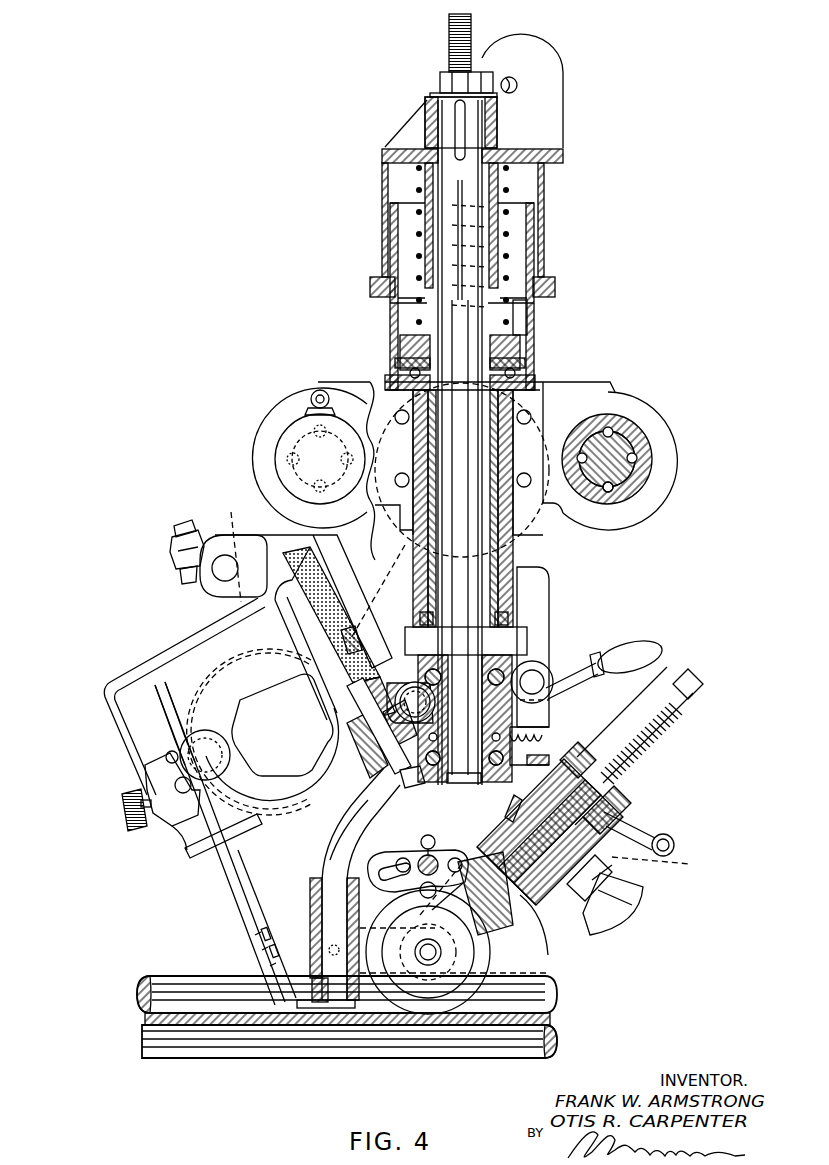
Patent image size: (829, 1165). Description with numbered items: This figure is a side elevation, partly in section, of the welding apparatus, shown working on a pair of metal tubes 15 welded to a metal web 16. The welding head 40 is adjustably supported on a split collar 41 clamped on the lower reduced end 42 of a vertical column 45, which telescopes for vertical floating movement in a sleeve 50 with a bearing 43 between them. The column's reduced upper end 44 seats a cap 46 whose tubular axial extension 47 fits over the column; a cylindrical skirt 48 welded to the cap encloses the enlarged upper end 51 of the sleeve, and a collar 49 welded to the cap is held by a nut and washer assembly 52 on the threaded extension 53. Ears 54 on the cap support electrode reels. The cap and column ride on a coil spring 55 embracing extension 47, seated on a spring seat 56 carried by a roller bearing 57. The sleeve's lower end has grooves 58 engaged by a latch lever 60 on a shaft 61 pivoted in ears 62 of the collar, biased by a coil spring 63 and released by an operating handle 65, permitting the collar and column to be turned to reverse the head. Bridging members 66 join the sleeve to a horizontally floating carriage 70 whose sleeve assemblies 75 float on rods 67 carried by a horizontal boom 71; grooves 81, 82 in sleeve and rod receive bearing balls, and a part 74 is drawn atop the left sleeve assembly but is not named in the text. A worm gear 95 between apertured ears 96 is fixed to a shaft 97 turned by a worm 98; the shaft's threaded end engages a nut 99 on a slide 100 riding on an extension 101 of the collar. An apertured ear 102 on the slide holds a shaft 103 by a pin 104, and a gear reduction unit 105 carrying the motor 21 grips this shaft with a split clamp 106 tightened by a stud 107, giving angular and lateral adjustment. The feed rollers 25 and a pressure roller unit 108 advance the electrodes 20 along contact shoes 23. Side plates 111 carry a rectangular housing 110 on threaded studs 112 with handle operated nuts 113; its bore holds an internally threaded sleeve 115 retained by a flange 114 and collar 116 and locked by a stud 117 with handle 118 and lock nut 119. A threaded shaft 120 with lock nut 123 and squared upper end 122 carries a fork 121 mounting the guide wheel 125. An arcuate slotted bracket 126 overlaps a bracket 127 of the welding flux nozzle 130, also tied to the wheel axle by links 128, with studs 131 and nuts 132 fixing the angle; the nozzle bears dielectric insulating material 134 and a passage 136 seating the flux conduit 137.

The metal tube 15 is at (252, 1040).
The metal web 16 is at (192, 1017).
The wire electrode 20 is at (155, 700).
The motor 21 is at (302, 774).
The contact shoe 23 is at (222, 862).
The electrode feeding roller 25 is at (199, 731).
The welding head 40 is at (90, 705).
The split collar 41 is at (500, 772).
The lower reduced end 42 is at (496, 645).
The bearing 43 is at (398, 372).
The reduced upper end 44 is at (484, 116).
The vertical column 45 is at (490, 300).
The cap 46 is at (565, 162).
The tubular axial extension 47 is at (502, 252).
The cylindrical skirt 48 is at (545, 196).
The collar 49 is at (425, 112).
The sleeve 50 is at (545, 382).
The enlarged upper end 51 is at (527, 322).
The nut and washer assembly 52 is at (440, 80).
The threaded extension 53 is at (449, 30).
The ear 54 is at (540, 66).
The coil spring 55 is at (415, 228).
The spring seat 56 is at (396, 322).
The roller bearing 57 is at (404, 342).
The longitudinal groove 58 is at (416, 538).
The latch lever 60 is at (549, 592).
The shaft 61 is at (538, 676).
The ear 62 is at (549, 696).
The coil spring 63 is at (550, 740).
The operating handle 65 is at (652, 646).
The bridging member 66 is at (335, 381).
The rod 67 is at (636, 450).
The horizontally floating carriage 70 is at (680, 404).
The horizontal boom 71 is at (376, 546).
The cap 74 is at (306, 408).
The sleeve assembly 75 is at (246, 434).
The semi-cylindrical groove 81 is at (612, 432).
The groove 82 is at (612, 488).
The worm gear 95 is at (365, 758).
The apertured ear 96 is at (384, 726).
The shaft 97 is at (405, 788).
The worm 98 is at (415, 686).
The nut 99 is at (375, 628).
The slide 100 is at (325, 619).
The extension 101 is at (346, 598).
The apertured ear 102 is at (184, 560).
The shaft 103 is at (212, 568).
The pin 104 is at (235, 545).
The gear reduction unit 105 is at (146, 660).
The split clamp 106 is at (198, 598).
The stud 107 is at (188, 530).
The pressure roller unit 108 is at (157, 762).
The rectangular housing 110 is at (548, 880).
The side plate 111 is at (500, 805).
The threaded stud 112 is at (672, 862).
The handle operated nut 113 is at (640, 830).
The flange 114 is at (522, 897).
The internally threaded sleeve 115 is at (506, 812).
The collar 116 is at (625, 800).
The stud 117 is at (630, 915).
The handle 118 is at (626, 893).
The lock nut 119 is at (615, 858).
The threaded shaft 120 is at (640, 733).
The fork 121 is at (490, 910).
The squared upper end 122 is at (695, 680).
The lock nut 123 is at (600, 768).
The guide wheel 125 is at (458, 1022).
The arcuate slotted bracket 126 is at (430, 942).
The bracket 127 is at (394, 878).
The link 128 is at (387, 1012).
The welding flux nozzle 130 is at (346, 1002).
The stud 131 is at (424, 852).
The nut 132 is at (432, 852).
The dielectric insulating material 134 is at (311, 885).
The passage 136 is at (311, 910).
The flux conduit 137 is at (345, 822).